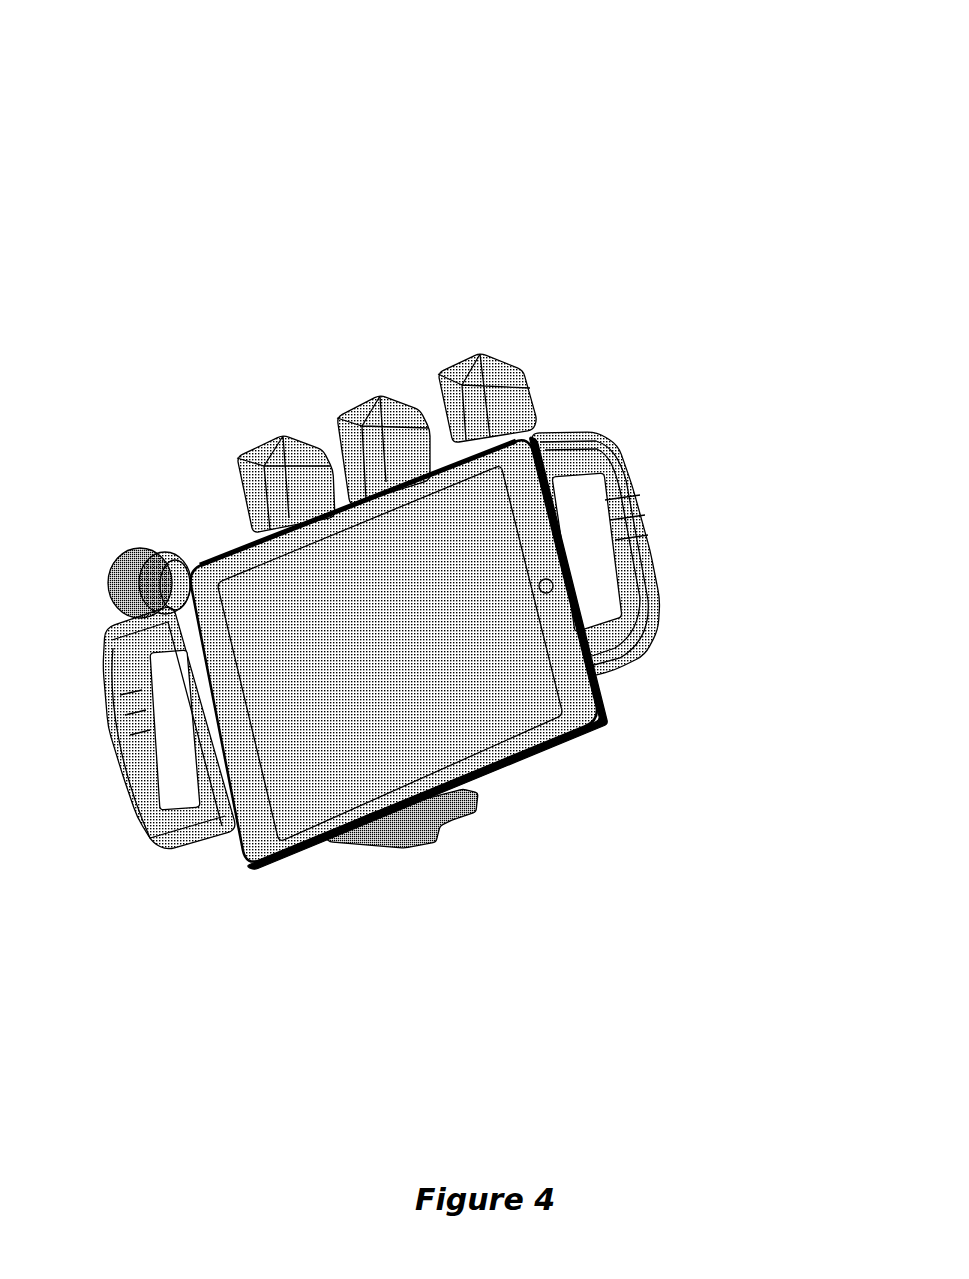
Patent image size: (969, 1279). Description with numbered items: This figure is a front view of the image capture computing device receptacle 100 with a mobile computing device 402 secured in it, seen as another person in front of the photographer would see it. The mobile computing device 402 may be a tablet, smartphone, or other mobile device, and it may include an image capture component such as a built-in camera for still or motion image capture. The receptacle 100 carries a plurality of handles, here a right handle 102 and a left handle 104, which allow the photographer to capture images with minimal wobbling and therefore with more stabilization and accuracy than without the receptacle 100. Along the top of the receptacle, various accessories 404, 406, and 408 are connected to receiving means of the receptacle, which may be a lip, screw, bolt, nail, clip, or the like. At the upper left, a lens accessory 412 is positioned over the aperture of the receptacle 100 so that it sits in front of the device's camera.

The image capture computing device receptacle 100 is at (470, 72).
The right handle 102 is at (603, 440).
The left handle 104 is at (102, 652).
The mobile computing device 402 is at (576, 735).
The accessory 404 is at (491, 387).
The accessory 406 is at (386, 400).
The accessory 408 is at (258, 468).
The lens accessory 412 is at (138, 572).